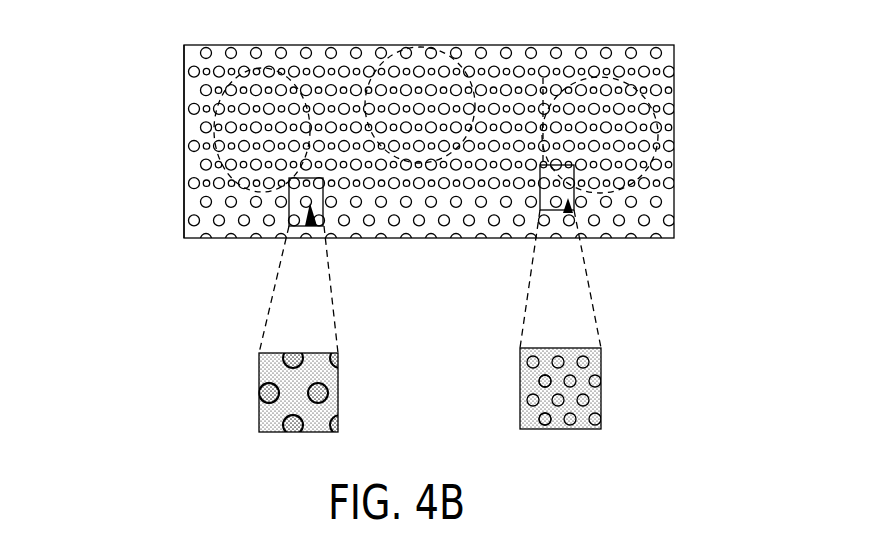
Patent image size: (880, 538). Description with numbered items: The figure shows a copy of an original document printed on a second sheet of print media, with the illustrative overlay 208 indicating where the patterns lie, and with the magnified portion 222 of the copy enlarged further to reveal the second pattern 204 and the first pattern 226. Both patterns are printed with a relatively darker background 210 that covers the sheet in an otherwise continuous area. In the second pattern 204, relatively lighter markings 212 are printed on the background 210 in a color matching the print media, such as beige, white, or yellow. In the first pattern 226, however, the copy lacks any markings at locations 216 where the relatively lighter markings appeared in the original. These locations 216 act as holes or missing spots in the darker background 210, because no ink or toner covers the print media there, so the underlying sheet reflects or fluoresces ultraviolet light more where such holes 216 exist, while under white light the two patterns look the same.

The illustrative overlay 208 is at (668, 58).
The magnified portion 222 is at (184, 168).
The second pattern 204 is at (307, 228).
The relatively darker background 210 is at (258, 378).
The relatively lighter markings 212 is at (273, 427).
The first pattern 226 is at (564, 215).
The locations lacking markings 216 is at (522, 418).